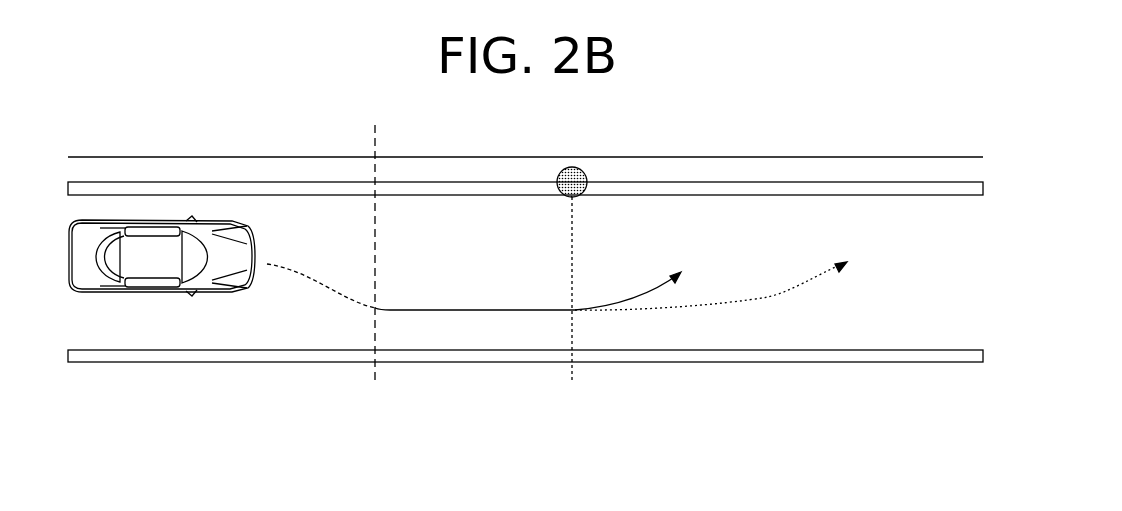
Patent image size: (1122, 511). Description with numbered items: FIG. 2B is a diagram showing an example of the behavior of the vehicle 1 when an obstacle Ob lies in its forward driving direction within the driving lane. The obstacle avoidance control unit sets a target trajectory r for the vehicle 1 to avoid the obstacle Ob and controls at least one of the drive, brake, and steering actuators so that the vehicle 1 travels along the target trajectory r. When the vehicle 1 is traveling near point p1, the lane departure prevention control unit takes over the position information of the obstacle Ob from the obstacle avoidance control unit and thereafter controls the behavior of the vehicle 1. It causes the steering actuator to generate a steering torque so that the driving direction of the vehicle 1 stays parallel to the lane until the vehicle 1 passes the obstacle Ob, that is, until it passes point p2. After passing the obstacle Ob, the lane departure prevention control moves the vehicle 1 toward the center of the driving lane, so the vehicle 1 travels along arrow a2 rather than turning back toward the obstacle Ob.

The vehicle 1 is at (190, 221).
The obstacle Ob is at (579, 170).
The arrow a2 is at (522, 308).
The target trajectory r is at (771, 296).
The point p1 is at (377, 268).
The point p2 is at (572, 304).